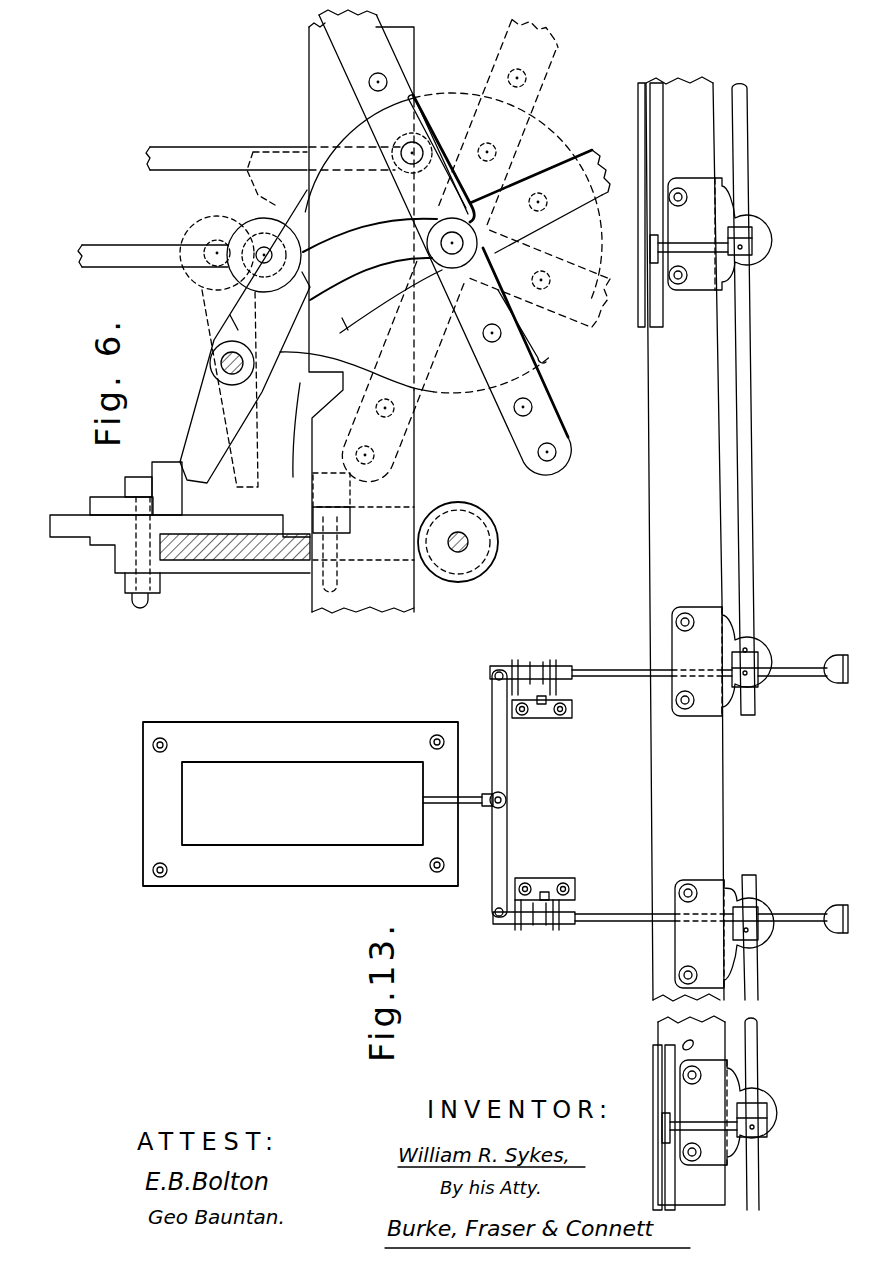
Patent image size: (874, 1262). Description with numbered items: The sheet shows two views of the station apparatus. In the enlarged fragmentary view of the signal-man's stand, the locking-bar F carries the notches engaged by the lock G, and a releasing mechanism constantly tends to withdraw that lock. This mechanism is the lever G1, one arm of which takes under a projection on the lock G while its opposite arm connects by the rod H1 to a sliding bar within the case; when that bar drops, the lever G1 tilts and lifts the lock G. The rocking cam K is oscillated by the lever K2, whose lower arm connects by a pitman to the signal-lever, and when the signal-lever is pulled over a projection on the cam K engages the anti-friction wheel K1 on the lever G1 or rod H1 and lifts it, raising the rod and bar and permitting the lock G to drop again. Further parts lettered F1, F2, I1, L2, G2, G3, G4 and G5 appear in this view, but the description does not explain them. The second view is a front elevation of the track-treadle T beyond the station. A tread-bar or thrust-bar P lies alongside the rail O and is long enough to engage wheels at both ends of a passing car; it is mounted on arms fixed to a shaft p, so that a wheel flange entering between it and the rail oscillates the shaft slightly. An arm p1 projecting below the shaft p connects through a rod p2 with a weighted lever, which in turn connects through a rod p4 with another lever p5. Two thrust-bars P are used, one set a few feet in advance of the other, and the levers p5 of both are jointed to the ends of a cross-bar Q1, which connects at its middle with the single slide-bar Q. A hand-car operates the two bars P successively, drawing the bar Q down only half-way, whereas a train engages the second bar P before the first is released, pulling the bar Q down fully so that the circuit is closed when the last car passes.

In FIG. 6, the locking-bar F is at (361, 318).
In FIG. 6, the block on plate F1 is at (361, 532).
In FIG. 6, the roller F2 is at (458, 534).
In FIG. 6, the arm I1 is at (439, 242).
In FIG. 6, the rocking cam K is at (445, 251).
In FIG. 6, the anti-friction wheel K1 is at (240, 345).
In FIG. 6, the lever K2 is at (540, 201).
In FIG. 6, the bar L2 is at (273, 163).
In FIG. 6, the rod H1 is at (153, 248).
In FIG. 6, the lock G is at (173, 527).
In FIG. 6, the lever G1 is at (205, 420).
In FIG. 6, the packing G2 is at (240, 575).
In FIG. 6, the curved arm G3 is at (349, 348).
In FIG. 6, the pin G4 is at (221, 314).
In FIG. 6, the pin G5 is at (335, 312).
In FIG. 13, the rail O is at (685, 641).
In FIG. 13, the shaft p is at (751, 647).
In FIG. 13, the tread-bar or thrust-bar P is at (669, 646).
In FIG. 13, the arm p1 is at (765, 794).
In FIG. 13, the rod p2 is at (803, 785).
In FIG. 13, the rod p4 is at (652, 786).
In FIG. 13, the lever p5 is at (532, 801).
In FIG. 13, the slide-bar Q is at (318, 804).
In FIG. 13, the cross-bar Q1 is at (481, 793).
In FIG. 13, the track-treadle T is at (690, 671).